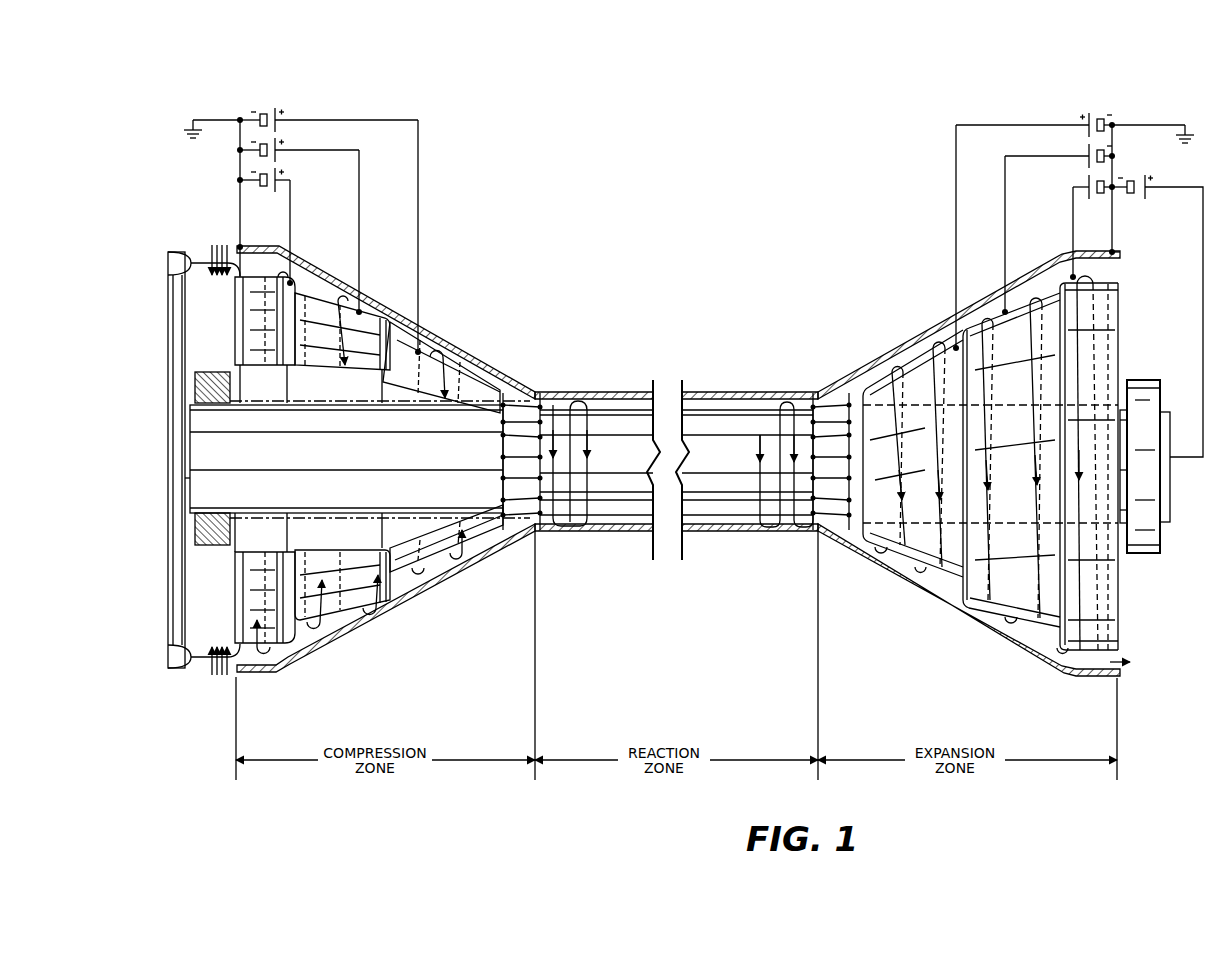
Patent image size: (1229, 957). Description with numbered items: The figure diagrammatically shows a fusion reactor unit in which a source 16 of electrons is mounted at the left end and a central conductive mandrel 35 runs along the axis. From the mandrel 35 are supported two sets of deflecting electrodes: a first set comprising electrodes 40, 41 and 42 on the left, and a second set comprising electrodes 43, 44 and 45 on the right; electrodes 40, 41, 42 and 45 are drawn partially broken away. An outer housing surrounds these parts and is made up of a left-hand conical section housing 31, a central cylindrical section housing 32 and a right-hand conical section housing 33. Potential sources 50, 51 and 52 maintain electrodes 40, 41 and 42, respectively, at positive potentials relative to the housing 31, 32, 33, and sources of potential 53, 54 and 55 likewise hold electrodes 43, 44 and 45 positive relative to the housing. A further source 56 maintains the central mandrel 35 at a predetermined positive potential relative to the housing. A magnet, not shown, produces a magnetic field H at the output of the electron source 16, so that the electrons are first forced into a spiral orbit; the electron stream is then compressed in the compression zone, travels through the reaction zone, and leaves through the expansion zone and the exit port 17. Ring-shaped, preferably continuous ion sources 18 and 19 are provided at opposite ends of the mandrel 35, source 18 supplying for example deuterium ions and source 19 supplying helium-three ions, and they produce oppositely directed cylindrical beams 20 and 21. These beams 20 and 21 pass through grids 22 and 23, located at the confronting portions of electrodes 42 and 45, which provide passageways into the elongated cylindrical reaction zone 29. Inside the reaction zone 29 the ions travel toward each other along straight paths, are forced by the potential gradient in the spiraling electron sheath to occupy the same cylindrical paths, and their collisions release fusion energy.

The source of electrons 16 is at (173, 378).
The exit port 17 is at (1120, 264).
The ion source 18 is at (195, 386).
The ion source 19 is at (1152, 398).
The cylindrical beam 20 is at (411, 400).
The cylindrical beam 21 is at (1020, 410).
The grid 22 is at (500, 440).
The grid 23 is at (850, 476).
The reaction zone 29 is at (737, 398).
The left-hand conical section housing 31 is at (400, 605).
The central cylindrical section housing 32 is at (616, 531).
The right-hand conical section housing 33 is at (938, 602).
The central conductive mandrel 35 is at (190, 478).
The deflecting electrode 40 is at (283, 645).
The deflecting electrode 41 is at (340, 616).
The deflecting electrode 42 is at (432, 562).
The deflecting electrode 43 is at (1093, 652).
The deflecting electrode 44 is at (997, 610).
The deflecting electrode 45 is at (897, 553).
The potential source 50 is at (270, 192).
The potential source 51 is at (280, 148).
The potential source 52 is at (272, 110).
The source of potential 53 is at (1110, 178).
The source of potential 54 is at (1110, 152).
The source of potential 55 is at (1108, 120).
The source 56 is at (1137, 198).
The magnetic field H is at (220, 240).